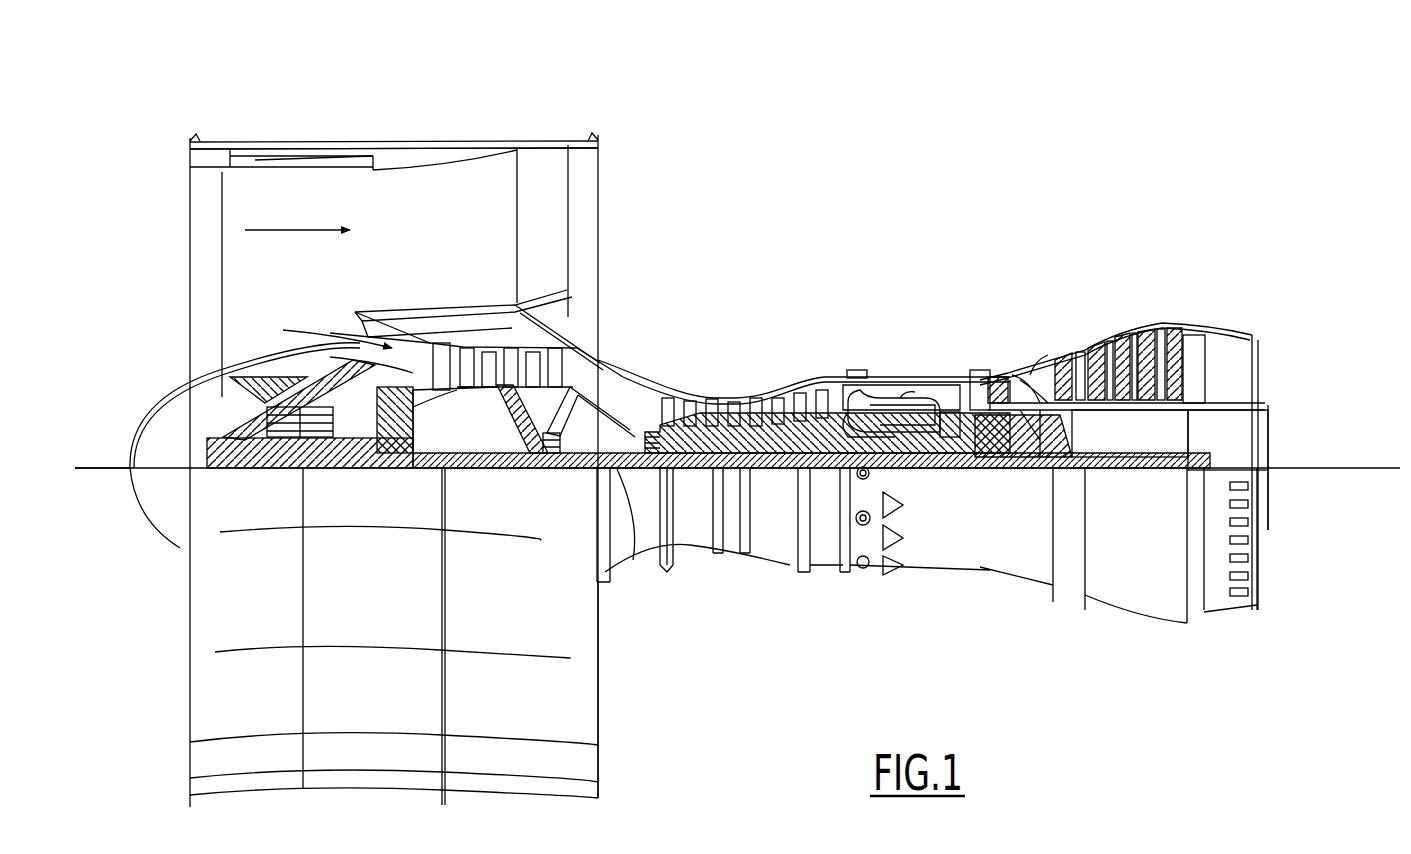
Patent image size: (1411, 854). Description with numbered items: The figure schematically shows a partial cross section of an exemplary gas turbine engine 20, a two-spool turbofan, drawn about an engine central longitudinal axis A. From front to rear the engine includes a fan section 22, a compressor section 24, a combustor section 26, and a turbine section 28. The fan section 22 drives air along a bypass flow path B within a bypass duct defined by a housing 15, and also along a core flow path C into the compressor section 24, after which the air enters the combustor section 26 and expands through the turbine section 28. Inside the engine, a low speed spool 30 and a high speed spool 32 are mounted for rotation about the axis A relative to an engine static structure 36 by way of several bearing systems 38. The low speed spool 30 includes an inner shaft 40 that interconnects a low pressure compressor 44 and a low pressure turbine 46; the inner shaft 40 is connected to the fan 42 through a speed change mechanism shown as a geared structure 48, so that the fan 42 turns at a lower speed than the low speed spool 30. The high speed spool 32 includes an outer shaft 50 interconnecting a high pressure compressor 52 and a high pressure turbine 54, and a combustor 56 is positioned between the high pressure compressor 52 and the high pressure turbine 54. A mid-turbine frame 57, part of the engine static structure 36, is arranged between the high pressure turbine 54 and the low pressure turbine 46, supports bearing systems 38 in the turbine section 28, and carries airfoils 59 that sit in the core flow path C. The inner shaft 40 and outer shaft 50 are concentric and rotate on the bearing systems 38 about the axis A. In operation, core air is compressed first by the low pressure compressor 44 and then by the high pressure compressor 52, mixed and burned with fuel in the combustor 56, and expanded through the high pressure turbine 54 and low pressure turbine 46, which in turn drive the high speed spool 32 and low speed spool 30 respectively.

The gas turbine engine 20 is at (912, 205).
The fan section 22 is at (315, 134).
The compressor section 24 is at (658, 360).
The combustor section 26 is at (913, 335).
The turbine section 28 is at (1073, 310).
The housing 15 is at (396, 149).
The low speed spool 30 is at (777, 480).
The high speed spool 32 is at (828, 378).
The engine static structure 36 is at (820, 575).
The bearing systems 38 is at (550, 468).
The inner shaft 40 is at (630, 570).
The fan 42 is at (285, 294).
The low pressure compressor 44 is at (577, 297).
The low pressure turbine 46 is at (1128, 325).
The geared structure 48 is at (398, 468).
The outer shaft 50 is at (918, 470).
The high pressure compressor 52 is at (733, 390).
The high pressure turbine 54 is at (983, 375).
The combustor 56 is at (906, 400).
The mid-turbine frame 57 is at (1052, 345).
The airfoils 59 is at (1075, 437).
The engine central longitudinal axis A is at (1364, 468).
The bypass flow path B is at (285, 228).
The core flow path C is at (327, 329).